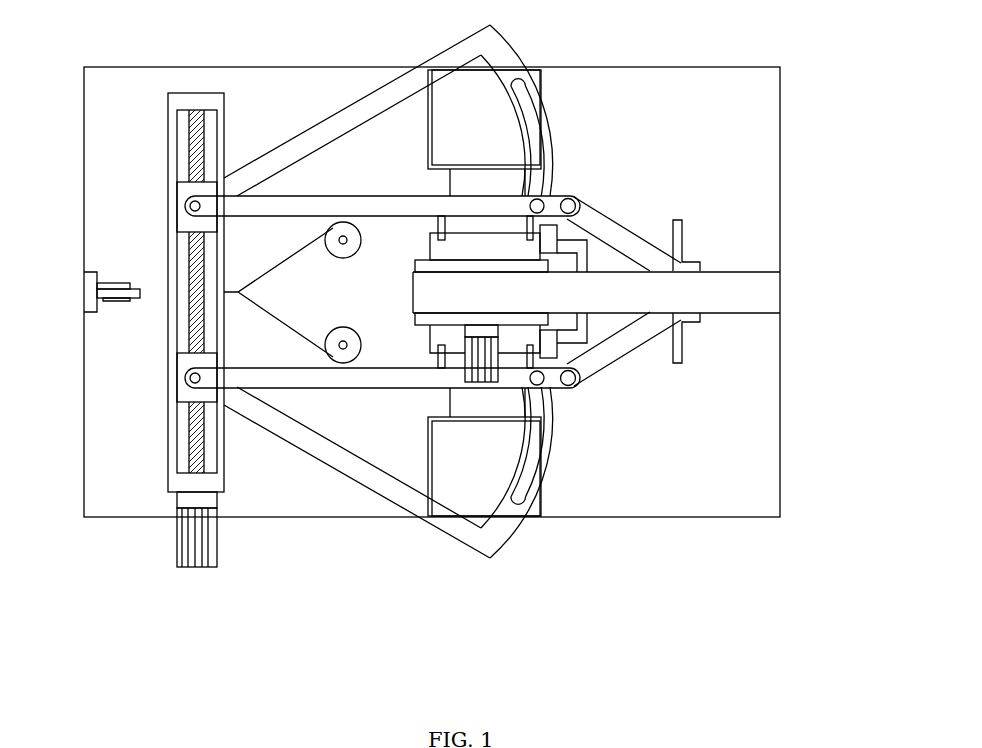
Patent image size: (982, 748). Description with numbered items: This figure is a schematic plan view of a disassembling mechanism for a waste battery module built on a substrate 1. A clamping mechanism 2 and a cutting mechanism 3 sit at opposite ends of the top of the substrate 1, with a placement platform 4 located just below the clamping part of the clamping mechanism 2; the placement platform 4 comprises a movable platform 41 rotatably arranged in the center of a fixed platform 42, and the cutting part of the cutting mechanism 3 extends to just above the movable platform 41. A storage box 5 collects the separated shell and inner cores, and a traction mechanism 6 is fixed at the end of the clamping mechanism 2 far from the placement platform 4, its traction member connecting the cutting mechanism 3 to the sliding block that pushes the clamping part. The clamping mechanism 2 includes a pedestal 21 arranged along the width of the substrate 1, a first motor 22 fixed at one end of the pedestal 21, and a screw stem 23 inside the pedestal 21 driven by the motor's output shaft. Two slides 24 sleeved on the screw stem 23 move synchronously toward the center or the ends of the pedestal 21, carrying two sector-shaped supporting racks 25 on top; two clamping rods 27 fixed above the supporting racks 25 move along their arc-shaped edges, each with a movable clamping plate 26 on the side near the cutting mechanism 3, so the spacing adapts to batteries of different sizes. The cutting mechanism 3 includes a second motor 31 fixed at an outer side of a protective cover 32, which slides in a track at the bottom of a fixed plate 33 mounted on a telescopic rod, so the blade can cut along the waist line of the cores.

The substrate 1 is at (113, 372).
The clamping mechanism 2 is at (401, 352).
The pedestal 21 is at (175, 481).
The first motor 22 is at (203, 537).
The screw stem 23 is at (203, 437).
The slide 24 is at (207, 360).
The supporting rack 25 is at (444, 516).
The movable clamping plate 26 is at (440, 355).
The clamping rod 27 is at (623, 406).
The cutting mechanism 3 is at (662, 359).
The second motor 31 is at (493, 352).
The protective cover 32 is at (543, 318).
The fixed plate 33 is at (712, 297).
The placement platform 4 is at (669, 293).
The movable platform 41 is at (528, 248).
The fixed platform 42 is at (497, 183).
The storage box 5 is at (544, 108).
The traction mechanism 6 is at (288, 258).